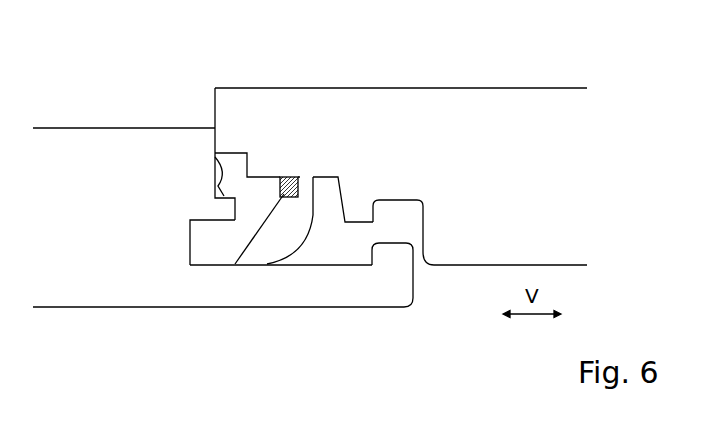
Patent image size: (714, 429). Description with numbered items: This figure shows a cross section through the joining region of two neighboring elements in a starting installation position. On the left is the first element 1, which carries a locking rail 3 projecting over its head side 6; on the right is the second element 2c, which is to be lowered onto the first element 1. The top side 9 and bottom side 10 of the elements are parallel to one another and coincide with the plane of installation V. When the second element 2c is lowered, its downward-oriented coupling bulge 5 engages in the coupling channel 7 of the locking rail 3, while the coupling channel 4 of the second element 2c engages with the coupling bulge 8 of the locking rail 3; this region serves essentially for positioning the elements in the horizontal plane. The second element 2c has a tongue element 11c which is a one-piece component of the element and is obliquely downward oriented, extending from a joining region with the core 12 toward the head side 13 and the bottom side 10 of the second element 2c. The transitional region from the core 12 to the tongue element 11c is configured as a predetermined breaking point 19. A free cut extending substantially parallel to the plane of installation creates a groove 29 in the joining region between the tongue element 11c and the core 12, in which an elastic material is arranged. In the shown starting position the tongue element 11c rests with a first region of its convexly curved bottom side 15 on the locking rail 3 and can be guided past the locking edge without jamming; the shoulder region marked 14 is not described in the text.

The first element 1 is at (71, 127).
The second element 2c is at (458, 88).
The locking rail 3 is at (228, 288).
The coupling channel 4 is at (398, 209).
The coupling bulge 5 is at (357, 212).
The head side 6 is at (216, 157).
The coupling channel 7 is at (363, 253).
The coupling bulge 8 is at (388, 255).
The top side 9 is at (371, 78).
The bottom side 10 is at (118, 318).
The tongue element 11c is at (287, 222).
The core 12 is at (536, 175).
The head side 13 is at (215, 112).
The shoulder 14 is at (250, 238).
The bottom side of the tongue element 15 is at (300, 247).
The predetermined breaking point 19 is at (305, 173).
The groove 29 is at (272, 184).